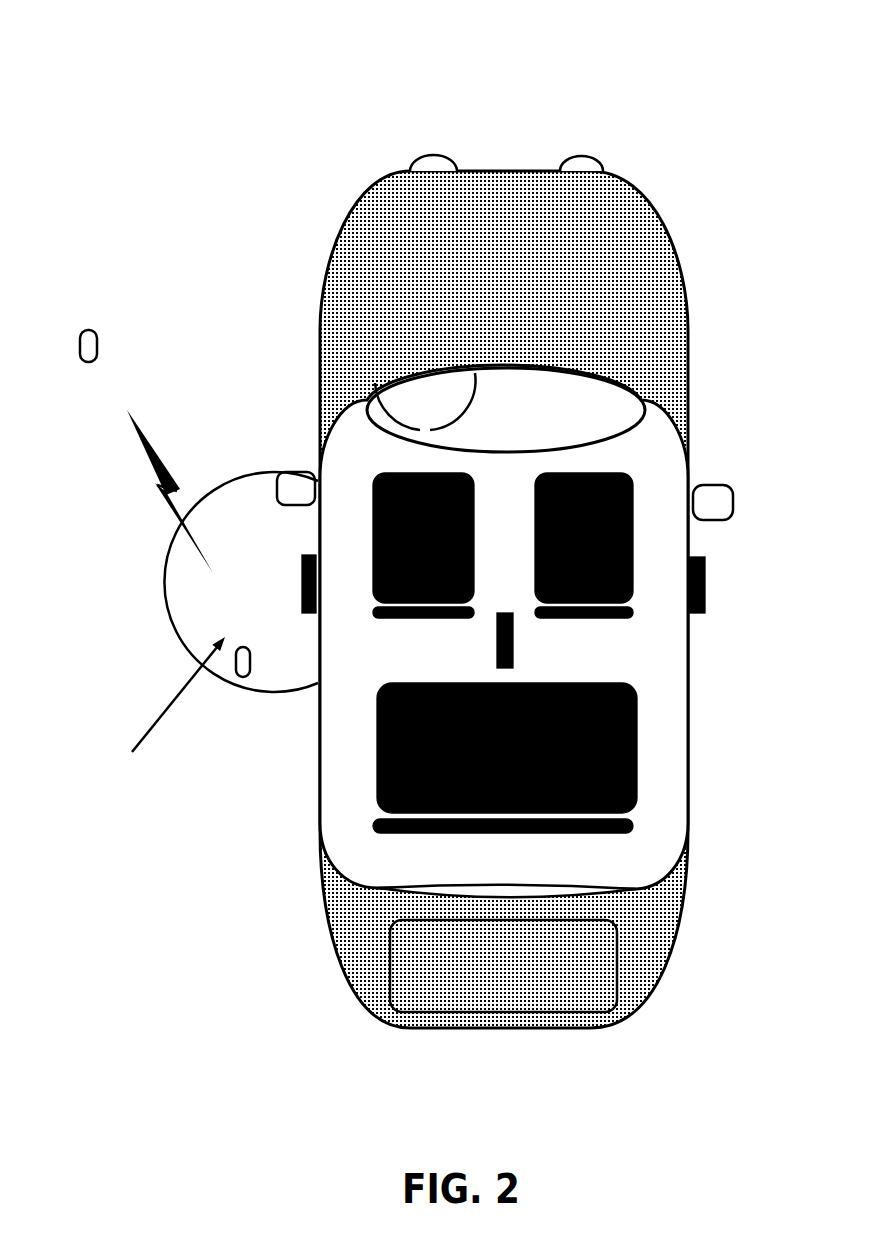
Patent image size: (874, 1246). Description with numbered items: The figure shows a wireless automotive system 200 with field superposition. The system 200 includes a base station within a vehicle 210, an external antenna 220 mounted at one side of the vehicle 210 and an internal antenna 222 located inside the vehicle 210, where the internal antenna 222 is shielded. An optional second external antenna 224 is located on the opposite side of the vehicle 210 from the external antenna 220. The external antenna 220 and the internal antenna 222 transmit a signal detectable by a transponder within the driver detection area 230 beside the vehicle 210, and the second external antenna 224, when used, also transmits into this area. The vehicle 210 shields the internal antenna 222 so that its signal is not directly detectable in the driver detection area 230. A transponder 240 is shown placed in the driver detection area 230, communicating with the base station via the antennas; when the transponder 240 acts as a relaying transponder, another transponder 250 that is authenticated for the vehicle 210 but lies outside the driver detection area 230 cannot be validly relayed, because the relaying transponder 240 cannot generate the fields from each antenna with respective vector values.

The wireless automotive system 200 is at (778, 37).
The vehicle 210 is at (645, 203).
The external antenna 220 is at (302, 556).
The internal antenna 222 is at (514, 645).
The second external antenna 224 is at (697, 557).
The driver detection area 230 is at (243, 477).
The transponder 240 is at (246, 647).
The transponder 250 is at (90, 330).